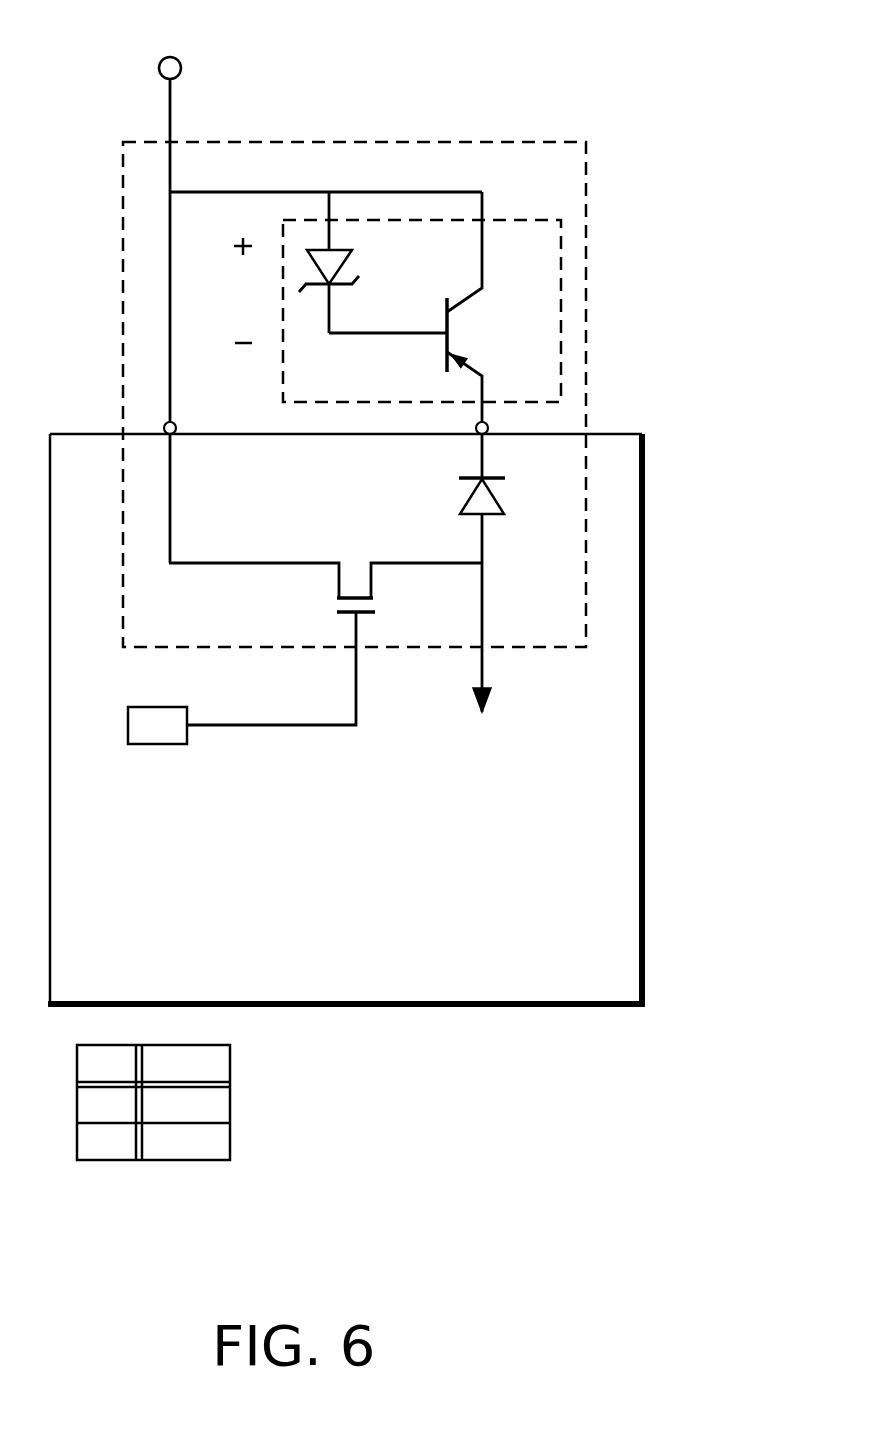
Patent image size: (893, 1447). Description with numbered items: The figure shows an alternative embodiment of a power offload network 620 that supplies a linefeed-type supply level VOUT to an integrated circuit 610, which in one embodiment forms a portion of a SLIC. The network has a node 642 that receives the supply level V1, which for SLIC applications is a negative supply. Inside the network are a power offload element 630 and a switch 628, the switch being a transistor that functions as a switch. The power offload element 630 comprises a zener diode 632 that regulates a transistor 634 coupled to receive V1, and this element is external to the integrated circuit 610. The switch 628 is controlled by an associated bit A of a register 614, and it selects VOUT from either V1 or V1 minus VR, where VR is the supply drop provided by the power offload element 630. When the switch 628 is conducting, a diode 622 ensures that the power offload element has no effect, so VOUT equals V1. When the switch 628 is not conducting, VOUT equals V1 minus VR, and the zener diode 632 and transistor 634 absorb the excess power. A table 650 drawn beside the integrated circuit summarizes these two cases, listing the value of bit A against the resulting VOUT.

The integrated circuit 610 is at (98, 433).
The register 614 is at (160, 746).
The power offload network 620 is at (590, 187).
The diode 622 is at (446, 493).
The switch 628 is at (331, 603).
The power offload element 630 is at (276, 383).
The zener diode 632 is at (357, 270).
The transistor 634 is at (465, 327).
The node 642 is at (191, 70).
The truth table 650 is at (240, 1092).